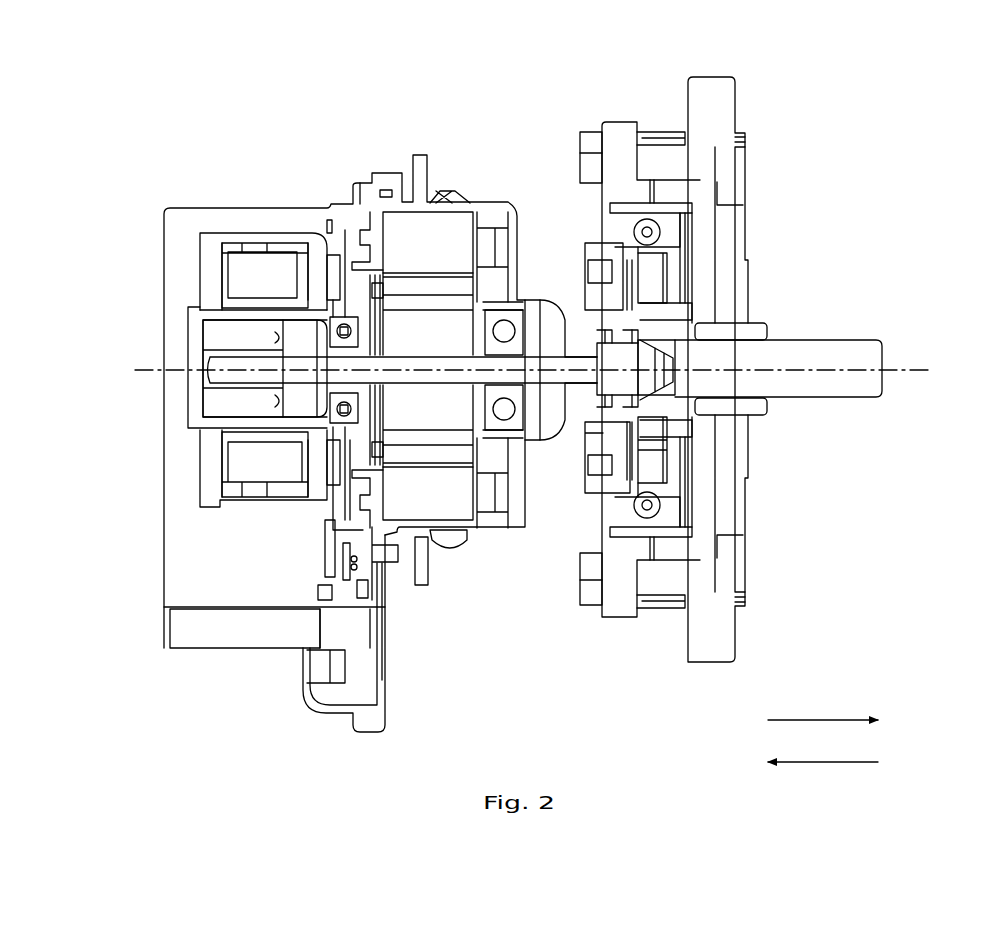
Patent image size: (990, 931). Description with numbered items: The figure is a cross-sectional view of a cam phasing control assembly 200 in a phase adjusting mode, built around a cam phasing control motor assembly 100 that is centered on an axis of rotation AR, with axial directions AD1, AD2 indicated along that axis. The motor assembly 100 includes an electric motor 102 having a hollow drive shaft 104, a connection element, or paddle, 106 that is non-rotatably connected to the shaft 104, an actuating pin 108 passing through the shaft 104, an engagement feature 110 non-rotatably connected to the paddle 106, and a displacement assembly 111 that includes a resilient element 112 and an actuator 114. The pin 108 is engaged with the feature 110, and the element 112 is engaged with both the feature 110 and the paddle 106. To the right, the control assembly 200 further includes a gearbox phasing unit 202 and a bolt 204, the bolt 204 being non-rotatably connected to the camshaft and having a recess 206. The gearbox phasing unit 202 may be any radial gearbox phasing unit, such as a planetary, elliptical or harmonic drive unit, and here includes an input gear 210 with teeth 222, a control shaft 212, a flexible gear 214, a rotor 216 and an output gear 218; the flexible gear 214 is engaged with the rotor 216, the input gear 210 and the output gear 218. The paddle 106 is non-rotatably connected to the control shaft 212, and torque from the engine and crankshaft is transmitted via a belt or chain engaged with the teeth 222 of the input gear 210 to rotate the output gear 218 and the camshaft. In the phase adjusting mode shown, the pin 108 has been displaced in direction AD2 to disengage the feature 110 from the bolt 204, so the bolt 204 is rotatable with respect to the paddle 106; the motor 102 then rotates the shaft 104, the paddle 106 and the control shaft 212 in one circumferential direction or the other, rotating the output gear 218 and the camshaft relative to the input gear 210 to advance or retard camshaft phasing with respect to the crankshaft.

The cam phasing control motor assembly 100 is at (309, 157).
The electric motor 102 is at (446, 193).
The hollow drive shaft 104 is at (578, 340).
The connection element, or paddle 106 is at (585, 343).
The actuating pin 108 is at (218, 430).
The engagement feature 110 is at (620, 333).
The displacement assembly 111 is at (170, 322).
The resilient element 112 is at (620, 400).
The actuator 114 is at (220, 333).
The cam phasing control assembly 200 is at (523, 45).
The gearbox phasing unit 202 is at (742, 82).
The bolt 204 is at (880, 338).
The recess 206 is at (657, 397).
The input gear 210 is at (737, 112).
The control shaft 212 is at (610, 490).
The flexible gear 214 is at (660, 222).
The rotor 216 is at (655, 480).
The output gear 218 is at (703, 280).
The teeth 222 is at (705, 76).
The axis of rotation AR is at (893, 372).
The axial direction AD1 is at (803, 720).
The axial direction AD2 is at (823, 762).